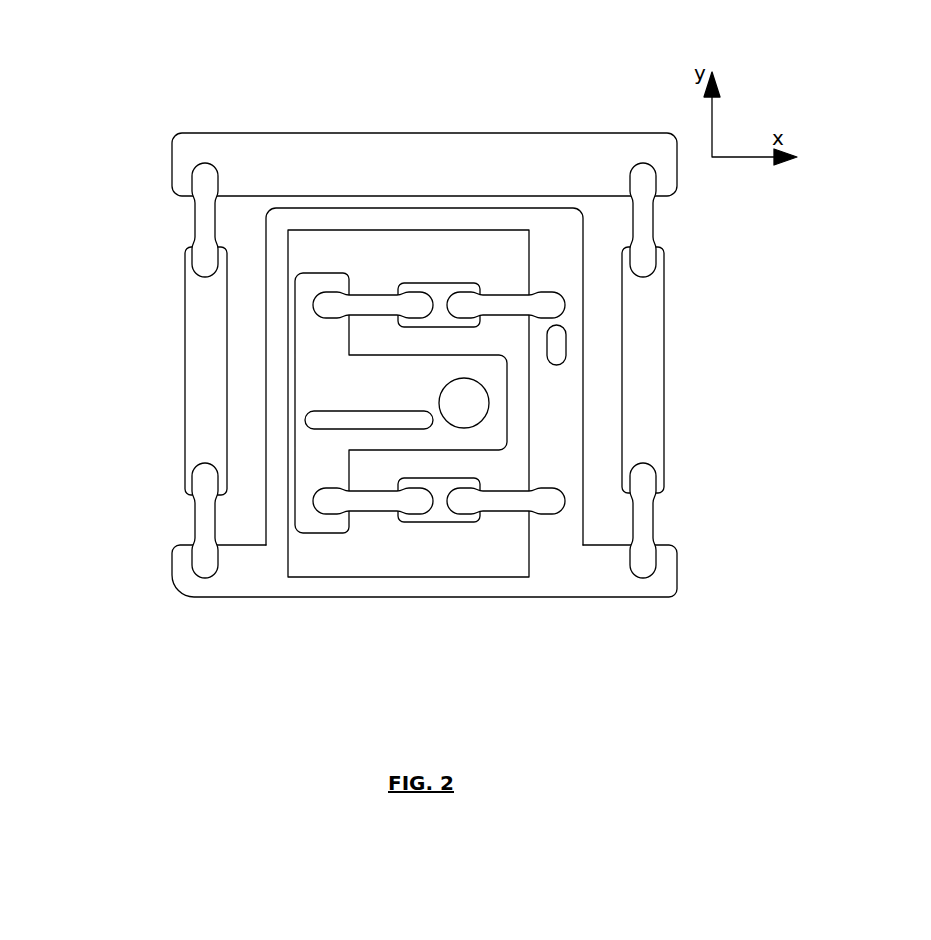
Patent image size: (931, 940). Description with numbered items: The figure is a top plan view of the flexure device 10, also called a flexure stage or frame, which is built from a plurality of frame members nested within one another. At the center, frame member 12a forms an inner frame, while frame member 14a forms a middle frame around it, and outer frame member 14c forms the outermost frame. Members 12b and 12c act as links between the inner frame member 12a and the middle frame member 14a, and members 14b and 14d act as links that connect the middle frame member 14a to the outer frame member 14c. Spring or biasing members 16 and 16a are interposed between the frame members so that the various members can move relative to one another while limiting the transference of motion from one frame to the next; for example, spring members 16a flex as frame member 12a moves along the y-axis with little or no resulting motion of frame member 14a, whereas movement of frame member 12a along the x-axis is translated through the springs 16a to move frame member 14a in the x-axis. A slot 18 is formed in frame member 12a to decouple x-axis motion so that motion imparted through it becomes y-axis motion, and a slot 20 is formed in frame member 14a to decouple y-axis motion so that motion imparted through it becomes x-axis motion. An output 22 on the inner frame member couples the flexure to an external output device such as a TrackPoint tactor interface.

The flexure device 10 is at (438, 366).
The frame member 12a is at (310, 528).
The member 12b is at (440, 507).
The member 12c is at (438, 294).
The frame member 14a is at (222, 585).
The member 14b is at (643, 433).
The outer frame member 14c is at (663, 157).
The member 14d is at (195, 318).
The spring member 16 is at (205, 212).
The spring member 16a is at (369, 300).
The slot 18 is at (310, 417).
The slot 20 is at (557, 342).
The output 22 is at (470, 403).